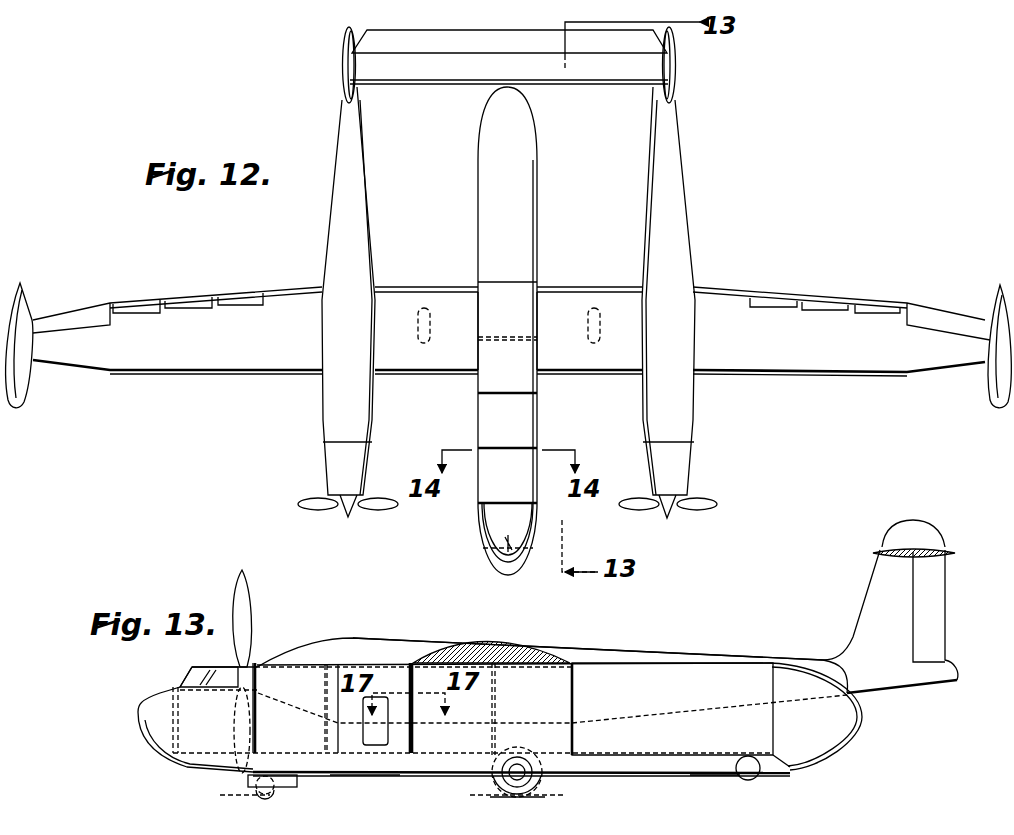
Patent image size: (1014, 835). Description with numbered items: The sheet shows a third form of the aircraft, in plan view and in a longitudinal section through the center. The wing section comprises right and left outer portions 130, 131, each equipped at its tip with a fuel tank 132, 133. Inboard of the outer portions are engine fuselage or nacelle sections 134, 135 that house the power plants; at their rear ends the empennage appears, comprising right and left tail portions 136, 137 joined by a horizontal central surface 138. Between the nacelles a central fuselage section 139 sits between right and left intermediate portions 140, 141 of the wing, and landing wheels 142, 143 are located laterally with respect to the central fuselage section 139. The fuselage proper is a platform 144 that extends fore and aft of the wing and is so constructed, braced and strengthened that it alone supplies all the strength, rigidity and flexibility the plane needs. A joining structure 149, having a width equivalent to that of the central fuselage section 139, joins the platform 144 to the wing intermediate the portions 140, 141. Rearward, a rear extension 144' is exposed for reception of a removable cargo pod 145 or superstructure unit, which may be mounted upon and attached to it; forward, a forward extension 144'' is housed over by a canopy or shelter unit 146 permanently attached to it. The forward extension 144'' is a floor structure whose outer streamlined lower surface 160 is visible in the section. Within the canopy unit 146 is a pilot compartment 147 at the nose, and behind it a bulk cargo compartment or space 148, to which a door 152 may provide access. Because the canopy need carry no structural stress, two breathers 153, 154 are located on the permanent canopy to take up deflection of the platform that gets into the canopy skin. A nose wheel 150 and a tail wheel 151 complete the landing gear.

In FIG. 12, the right outer wing portion 130 is at (794, 372).
In FIG. 12, the left outer wing portion 131 is at (118, 366).
In FIG. 12, the fuel tank 132 is at (990, 395).
In FIG. 12, the fuel tank 133 is at (20, 393).
In FIG. 12, the engine fuselage section 134 is at (647, 208).
In FIG. 12, the engine fuselage section 135 is at (327, 233).
In FIG. 13, the engine fuselage section 135 is at (441, 637).
In FIG. 12, the right tail portion 136 is at (674, 90).
In FIG. 12, the left tail portion 137 is at (345, 80).
In FIG. 13, the left tail portion 137 is at (864, 590).
In FIG. 12, the horizontal central surface 138 is at (422, 84).
In FIG. 13, the horizontal central surface 138 is at (880, 551).
In FIG. 12, the central fuselage section 139 is at (528, 296).
In FIG. 12, the right intermediate wing portion 140 is at (590, 372).
In FIG. 13, the right intermediate wing portion 140 is at (505, 646).
In FIG. 12, the left intermediate wing portion 141 is at (410, 372).
In FIG. 12, the landing wheel 142 is at (588, 324).
In FIG. 12, the landing wheel 143 is at (418, 322).
In FIG. 13, the landing wheel 143 is at (494, 780).
In FIG. 13, the platform 144 is at (544, 788).
In FIG. 13, the rear extension 144' is at (711, 786).
In FIG. 13, the forward extension 144'' is at (365, 786).
In FIG. 13, the removable cargo pod 145 is at (840, 745).
In FIG. 13, the canopy unit 146 is at (310, 662).
In FIG. 12, the pilot compartment 147 is at (495, 541).
In FIG. 13, the pilot compartment 147 is at (190, 680).
In FIG. 13, the bulk cargo compartment 148 is at (376, 671).
In FIG. 12, the joining structure 149 is at (478, 292).
In FIG. 13, the joining structure 149 is at (566, 694).
In FIG. 13, the nose wheel 150 is at (258, 790).
In FIG. 13, the tail wheel 151 is at (756, 776).
In FIG. 12, the door 152 is at (538, 428).
In FIG. 13, the door 152 is at (363, 742).
In FIG. 12, the breather 153 is at (485, 394).
In FIG. 13, the breather 153 is at (412, 742).
In FIG. 12, the breather 154 is at (481, 506).
In FIG. 13, the breather 154 is at (256, 735).
In FIG. 13, the streamlined lower surface 160 is at (213, 766).